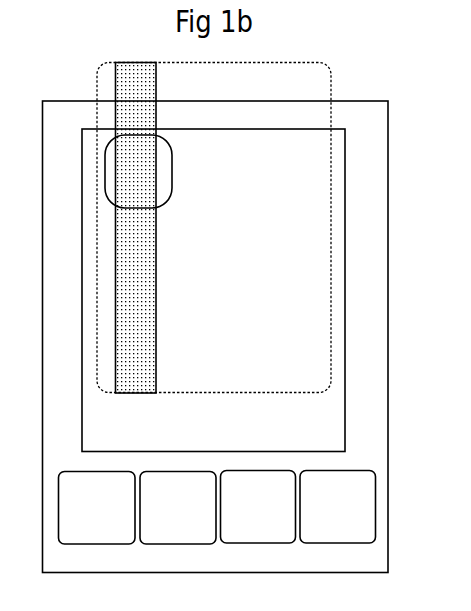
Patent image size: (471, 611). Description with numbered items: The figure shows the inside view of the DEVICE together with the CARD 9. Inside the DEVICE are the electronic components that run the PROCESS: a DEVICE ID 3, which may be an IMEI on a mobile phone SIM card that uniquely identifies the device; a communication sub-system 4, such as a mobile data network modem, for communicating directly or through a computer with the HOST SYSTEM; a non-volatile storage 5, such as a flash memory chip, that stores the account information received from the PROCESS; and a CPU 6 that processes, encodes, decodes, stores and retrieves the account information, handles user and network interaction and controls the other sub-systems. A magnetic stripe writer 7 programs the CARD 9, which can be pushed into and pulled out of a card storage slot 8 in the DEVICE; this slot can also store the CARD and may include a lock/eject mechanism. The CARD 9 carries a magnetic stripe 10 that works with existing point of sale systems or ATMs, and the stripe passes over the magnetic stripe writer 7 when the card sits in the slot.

The DEVICE ID 3 is at (97, 508).
The communication sub-system 4 is at (178, 508).
The non-volatile storage 5 is at (258, 507).
The CPU 6 is at (338, 507).
The magnetic stripe writer 7 is at (138, 171).
The card storage slot 8 is at (213, 290).
The CARD 9 is at (216, 337).
The magnetic stripe 10 is at (136, 228).